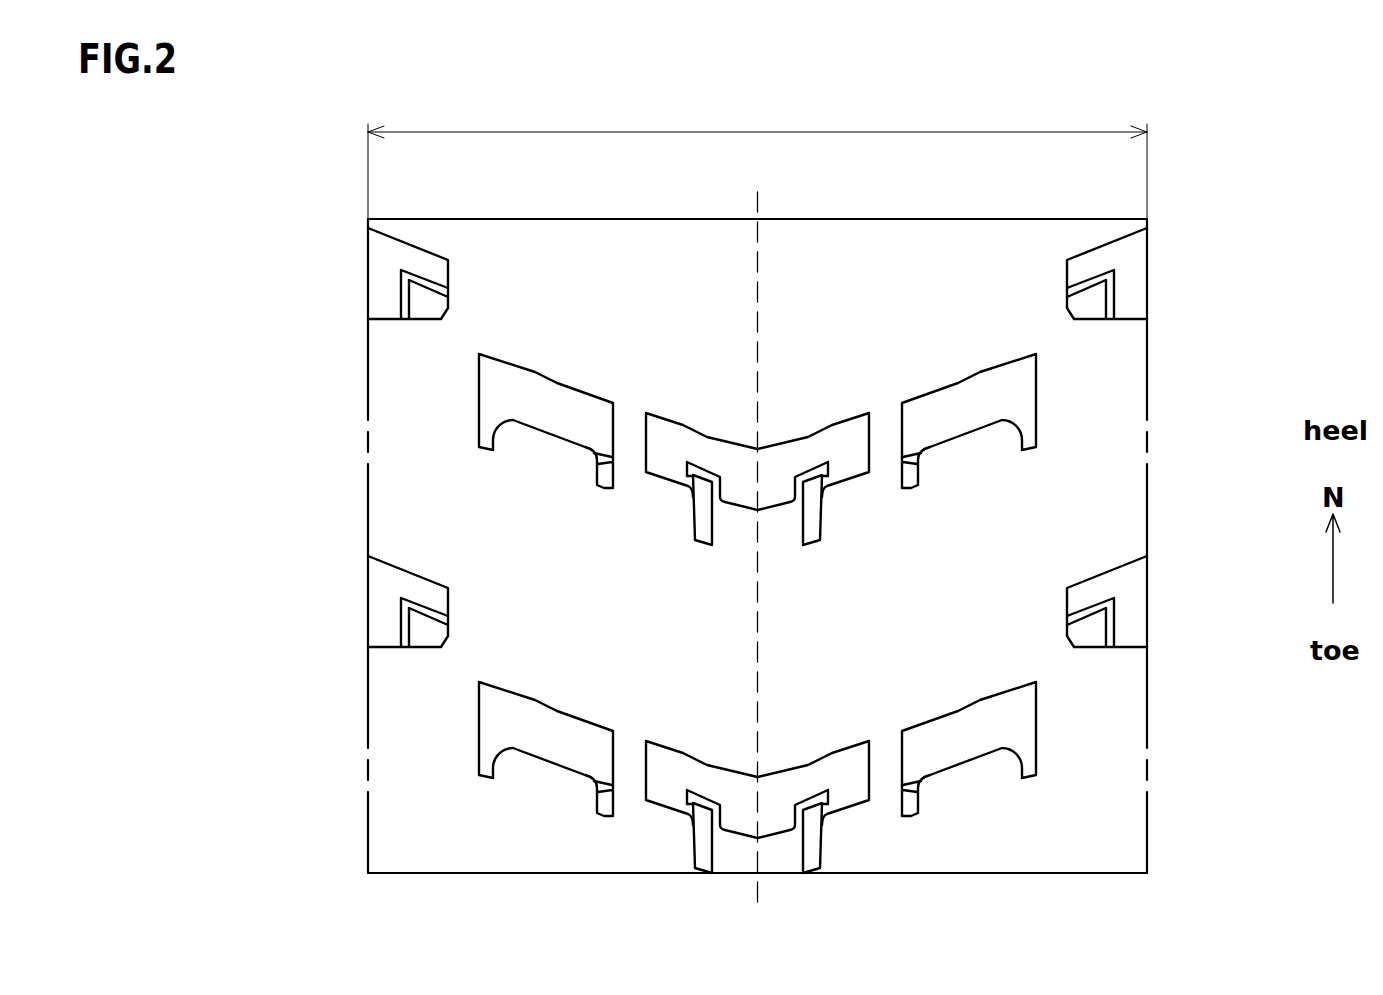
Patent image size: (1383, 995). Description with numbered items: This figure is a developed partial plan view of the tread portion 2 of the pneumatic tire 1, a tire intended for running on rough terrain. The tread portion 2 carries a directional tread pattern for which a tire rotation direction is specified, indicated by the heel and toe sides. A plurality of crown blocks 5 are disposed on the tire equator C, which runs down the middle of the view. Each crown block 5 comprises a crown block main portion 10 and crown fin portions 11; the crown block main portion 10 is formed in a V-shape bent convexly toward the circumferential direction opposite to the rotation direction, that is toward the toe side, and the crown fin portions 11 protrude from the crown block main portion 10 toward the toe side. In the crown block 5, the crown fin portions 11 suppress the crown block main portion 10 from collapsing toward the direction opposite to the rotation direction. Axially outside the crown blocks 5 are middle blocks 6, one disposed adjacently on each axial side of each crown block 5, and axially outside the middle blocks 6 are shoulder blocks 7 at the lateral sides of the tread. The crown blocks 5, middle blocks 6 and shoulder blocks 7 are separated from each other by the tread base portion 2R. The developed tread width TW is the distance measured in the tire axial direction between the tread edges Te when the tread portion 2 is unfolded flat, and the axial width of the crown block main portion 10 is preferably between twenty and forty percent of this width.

The pneumatic tire 1 is at (1266, 180).
The tread portion 2 is at (1164, 188).
The tread base portion 2R is at (557, 253).
The crown block 5 is at (807, 414).
The middle block 6 is at (965, 374).
The shoulder block 7 is at (1102, 241).
The crown block main portion 10 is at (723, 460).
The crown fin portion 11 is at (812, 523).
The tire equator C is at (759, 530).
The developed tread width TW is at (757, 158).
The tread edge Te is at (367, 268).